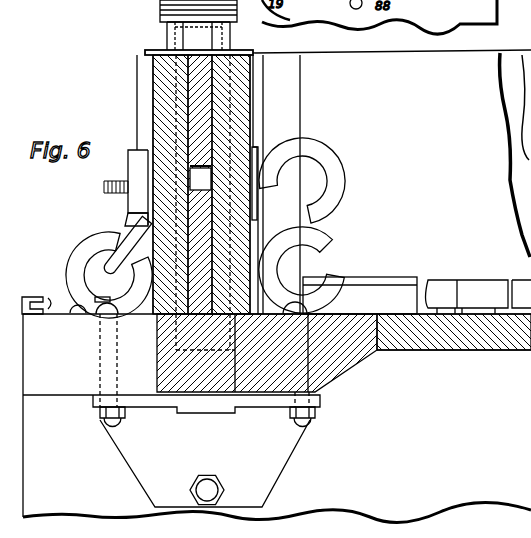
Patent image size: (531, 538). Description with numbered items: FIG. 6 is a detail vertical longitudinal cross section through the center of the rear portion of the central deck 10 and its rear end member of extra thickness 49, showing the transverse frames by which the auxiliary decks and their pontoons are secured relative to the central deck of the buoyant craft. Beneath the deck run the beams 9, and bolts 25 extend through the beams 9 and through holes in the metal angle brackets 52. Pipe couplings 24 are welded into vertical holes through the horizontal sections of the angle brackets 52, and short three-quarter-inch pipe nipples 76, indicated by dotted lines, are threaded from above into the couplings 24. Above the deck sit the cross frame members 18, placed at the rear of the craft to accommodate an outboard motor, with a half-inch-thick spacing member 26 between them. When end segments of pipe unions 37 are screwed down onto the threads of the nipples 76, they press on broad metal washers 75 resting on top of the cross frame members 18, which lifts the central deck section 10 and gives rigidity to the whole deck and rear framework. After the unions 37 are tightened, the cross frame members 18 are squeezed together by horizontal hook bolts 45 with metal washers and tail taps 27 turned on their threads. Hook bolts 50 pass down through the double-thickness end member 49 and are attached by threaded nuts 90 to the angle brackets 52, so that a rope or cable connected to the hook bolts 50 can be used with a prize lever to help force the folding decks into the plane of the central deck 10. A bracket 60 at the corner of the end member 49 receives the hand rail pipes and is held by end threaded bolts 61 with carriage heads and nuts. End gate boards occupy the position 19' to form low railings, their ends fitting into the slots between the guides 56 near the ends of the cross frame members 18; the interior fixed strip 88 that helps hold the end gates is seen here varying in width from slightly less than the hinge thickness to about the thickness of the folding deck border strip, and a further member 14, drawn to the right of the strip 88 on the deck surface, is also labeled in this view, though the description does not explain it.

The beam 9 is at (442, 437).
The central deck 10 is at (447, 341).
The plate member 14 is at (486, 301).
The cross frame member 18 is at (158, 82).
The end gate board position 19' is at (392, 153).
The pipe coupling 24 is at (206, 363).
The bolt 25 is at (207, 489).
The spacing member 26 is at (205, 202).
The tail tap 27 is at (127, 243).
The pipe union section 37 is at (187, 25).
The hook bolt 45 is at (200, 178).
The end member of extra thickness 49 is at (157, 377).
The hook bolt 50 is at (205, 228).
The metal angle bracket 52 is at (212, 441).
The guide 56 is at (283, 113).
The bracket 60 is at (36, 298).
The end threaded bolt 61 is at (83, 304).
The washer 75 is at (250, 52).
The pipe nipple 76 is at (267, 353).
The interior fixed strip 88 is at (372, 308).
The threaded nut 90 is at (104, 413).